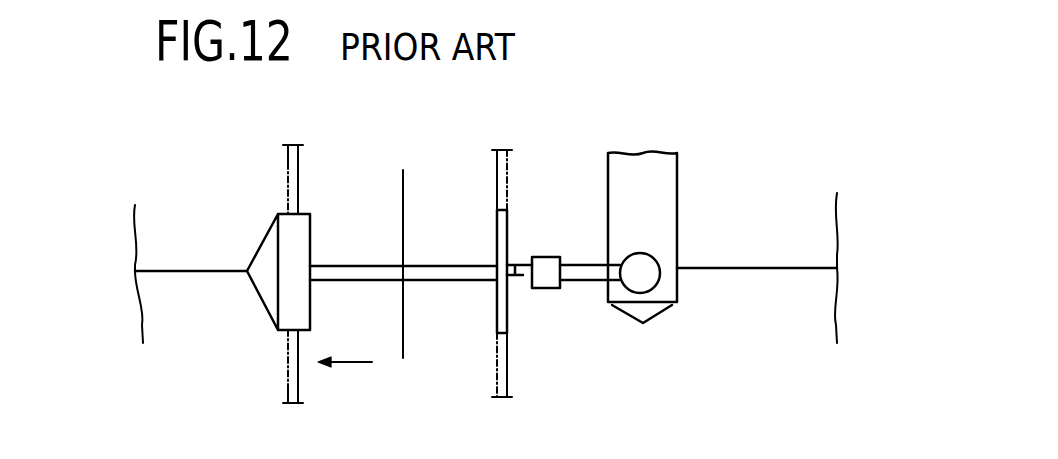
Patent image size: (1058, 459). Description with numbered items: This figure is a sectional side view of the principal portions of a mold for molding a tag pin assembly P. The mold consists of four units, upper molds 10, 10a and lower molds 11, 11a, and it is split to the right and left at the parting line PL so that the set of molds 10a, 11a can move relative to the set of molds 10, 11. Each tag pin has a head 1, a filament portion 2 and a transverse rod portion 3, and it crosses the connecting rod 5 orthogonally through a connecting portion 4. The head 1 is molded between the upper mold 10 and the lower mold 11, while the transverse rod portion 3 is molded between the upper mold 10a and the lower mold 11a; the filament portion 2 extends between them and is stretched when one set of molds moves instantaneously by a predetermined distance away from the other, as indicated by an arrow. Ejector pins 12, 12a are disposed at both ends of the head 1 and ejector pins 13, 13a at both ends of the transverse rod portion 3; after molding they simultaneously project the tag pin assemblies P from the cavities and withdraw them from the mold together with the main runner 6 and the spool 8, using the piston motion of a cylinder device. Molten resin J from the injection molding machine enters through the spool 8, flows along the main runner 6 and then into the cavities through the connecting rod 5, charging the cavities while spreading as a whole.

The head 1 is at (273, 240).
The filament portion 2 is at (378, 265).
The transverse rod portion 3 is at (497, 225).
The connecting portion 4 is at (518, 277).
The connecting rod 5 is at (547, 282).
The main runner portion 6 is at (650, 277).
The spool 8 is at (667, 188).
The upper mold 10 is at (163, 228).
The lower mold 11 is at (173, 322).
The upper mold 10a is at (813, 227).
The lower mold 11a is at (807, 315).
The ejector pin 12 is at (285, 163).
The ejector pin 12a is at (283, 388).
The ejector pin 13 is at (497, 177).
The ejector pin 13a is at (503, 370).
The tag pin assembly P is at (343, 250).
The parting line PL is at (403, 320).
The molten resin J is at (645, 118).